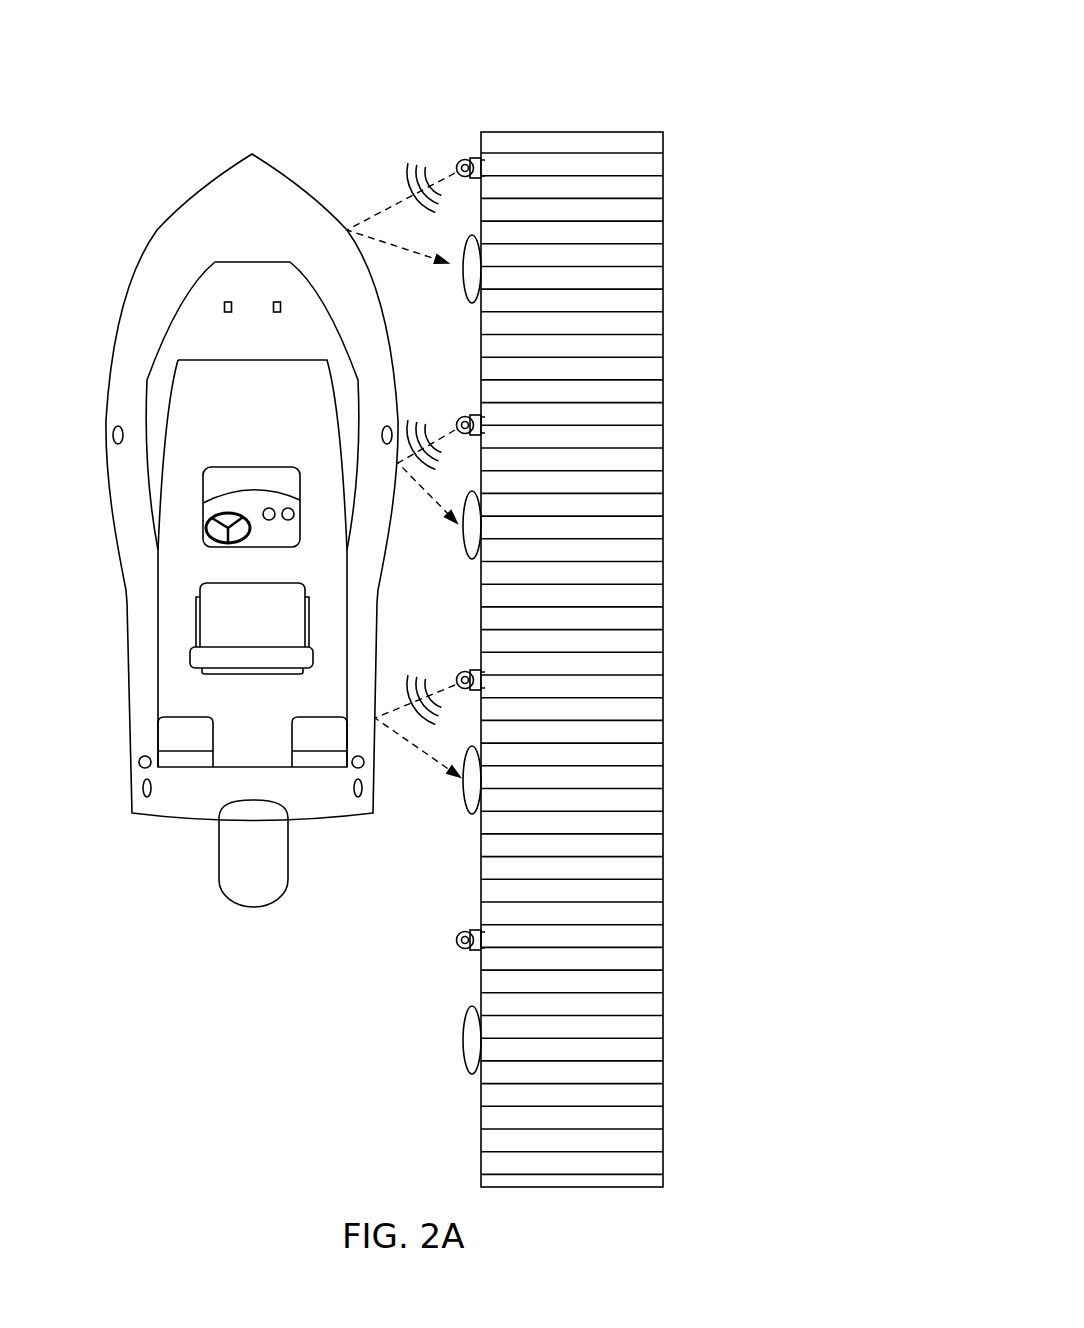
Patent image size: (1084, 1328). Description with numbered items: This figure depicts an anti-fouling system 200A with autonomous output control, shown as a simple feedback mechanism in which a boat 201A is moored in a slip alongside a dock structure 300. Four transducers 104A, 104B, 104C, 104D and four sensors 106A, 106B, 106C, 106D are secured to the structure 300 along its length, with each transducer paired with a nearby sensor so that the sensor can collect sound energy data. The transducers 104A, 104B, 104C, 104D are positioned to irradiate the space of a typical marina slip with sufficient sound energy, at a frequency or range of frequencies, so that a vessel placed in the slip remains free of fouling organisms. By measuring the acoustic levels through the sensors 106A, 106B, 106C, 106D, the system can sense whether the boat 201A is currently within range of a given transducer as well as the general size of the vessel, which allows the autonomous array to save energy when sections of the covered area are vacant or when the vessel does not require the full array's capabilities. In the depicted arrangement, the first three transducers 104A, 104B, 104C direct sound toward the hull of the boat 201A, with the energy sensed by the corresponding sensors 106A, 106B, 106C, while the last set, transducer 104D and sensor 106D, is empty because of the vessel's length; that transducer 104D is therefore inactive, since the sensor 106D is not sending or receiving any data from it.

The anti-fouling system 200A is at (663, 36).
The boat 201A is at (205, 225).
The structure 300 is at (647, 132).
The transducer 104A is at (471, 159).
The transducer 104B is at (472, 413).
The transducer 104C is at (470, 672).
The transducer 104D is at (476, 930).
The sensor 106A is at (463, 273).
The sensor 106B is at (463, 532).
The sensor 106C is at (463, 783).
The sensor 106D is at (463, 1055).